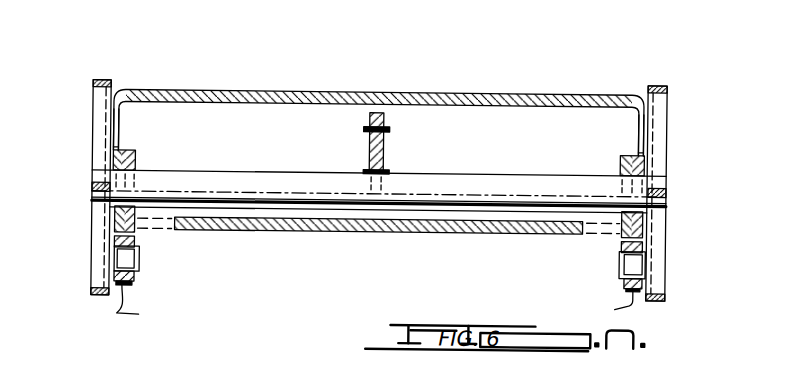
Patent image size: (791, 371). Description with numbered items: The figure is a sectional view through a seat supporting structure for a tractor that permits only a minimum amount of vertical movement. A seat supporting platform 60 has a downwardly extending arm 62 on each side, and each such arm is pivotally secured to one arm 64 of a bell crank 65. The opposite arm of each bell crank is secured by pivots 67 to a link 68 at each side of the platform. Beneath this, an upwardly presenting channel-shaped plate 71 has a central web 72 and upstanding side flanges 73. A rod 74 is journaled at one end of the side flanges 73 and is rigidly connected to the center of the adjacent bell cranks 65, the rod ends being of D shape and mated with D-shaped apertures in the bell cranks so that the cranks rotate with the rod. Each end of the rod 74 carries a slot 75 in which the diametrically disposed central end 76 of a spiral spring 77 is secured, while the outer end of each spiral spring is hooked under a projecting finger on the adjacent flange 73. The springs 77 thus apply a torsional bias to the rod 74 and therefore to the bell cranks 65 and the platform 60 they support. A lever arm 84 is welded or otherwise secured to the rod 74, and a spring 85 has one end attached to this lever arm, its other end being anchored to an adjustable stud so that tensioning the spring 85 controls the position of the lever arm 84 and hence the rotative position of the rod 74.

The seat supporting platform 60 is at (548, 96).
The downwardly extending arm 62 is at (114, 129).
The arm of bell crank 64 is at (374, 313).
The bell crank 65 is at (112, 158).
The pivot 67 is at (142, 259).
The link 68 is at (131, 283).
The channel-shaped plate 71 is at (357, 235).
The central web 72 is at (413, 233).
The side flange 73 is at (136, 161).
The rod 74 is at (458, 177).
The slot 75 is at (92, 201).
The central end of spiral spring 76 is at (92, 189).
The spiral spring 77 is at (103, 83).
The lever arm 84 is at (384, 118).
The spring 85 is at (364, 130).